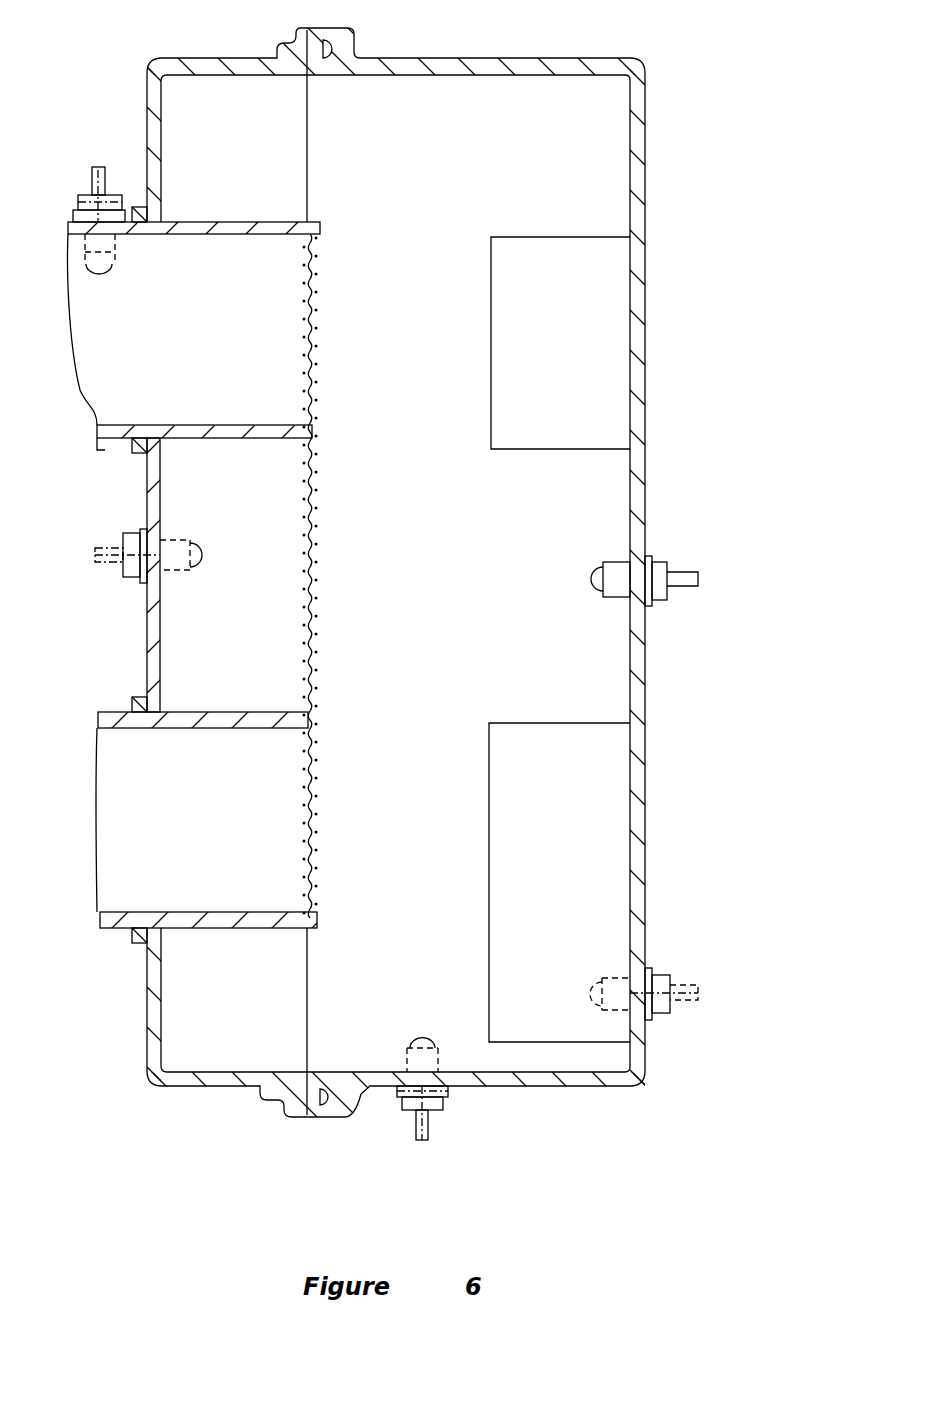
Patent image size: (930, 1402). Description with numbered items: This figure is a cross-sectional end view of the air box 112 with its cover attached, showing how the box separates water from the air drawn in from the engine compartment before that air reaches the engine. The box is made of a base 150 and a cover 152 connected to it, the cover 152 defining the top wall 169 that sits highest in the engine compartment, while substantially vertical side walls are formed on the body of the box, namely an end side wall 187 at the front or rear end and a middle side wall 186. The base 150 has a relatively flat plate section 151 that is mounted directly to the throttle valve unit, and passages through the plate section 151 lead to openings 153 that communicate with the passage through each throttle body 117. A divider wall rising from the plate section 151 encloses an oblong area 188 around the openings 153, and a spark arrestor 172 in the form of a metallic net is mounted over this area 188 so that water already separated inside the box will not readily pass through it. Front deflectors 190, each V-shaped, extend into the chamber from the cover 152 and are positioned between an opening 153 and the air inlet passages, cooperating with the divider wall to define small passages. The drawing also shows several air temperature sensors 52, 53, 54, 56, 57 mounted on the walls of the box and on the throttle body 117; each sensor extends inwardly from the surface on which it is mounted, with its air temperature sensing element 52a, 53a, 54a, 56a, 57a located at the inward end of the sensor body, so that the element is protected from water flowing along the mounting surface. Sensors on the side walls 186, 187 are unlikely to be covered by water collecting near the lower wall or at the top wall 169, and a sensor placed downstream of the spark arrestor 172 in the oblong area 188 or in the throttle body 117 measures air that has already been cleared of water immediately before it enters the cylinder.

The air box 112 is at (646, 346).
The end side wall 187 is at (510, 62).
The middle side wall 186 is at (638, 690).
The cover 152 is at (648, 1062).
The base 150 is at (185, 1088).
The top wall 169 is at (588, 120).
The throttle body 117 is at (103, 440).
The opening 153 is at (278, 400).
The plate section 151 is at (147, 598).
The oblong area 188 is at (220, 663).
The spark arrestor 172 is at (318, 372).
The front deflector 190 is at (527, 237).
The connector 57 is at (118, 262).
The connector terminal 57a is at (93, 272).
The connector 56 is at (165, 545).
The connector terminal 56a is at (200, 558).
The connector 52 is at (618, 562).
The connector terminal 52a is at (593, 580).
The connector 53 is at (620, 977).
The connector terminal 53a is at (592, 992).
The connector 54 is at (405, 1050).
The connector terminal 54a is at (425, 1040).